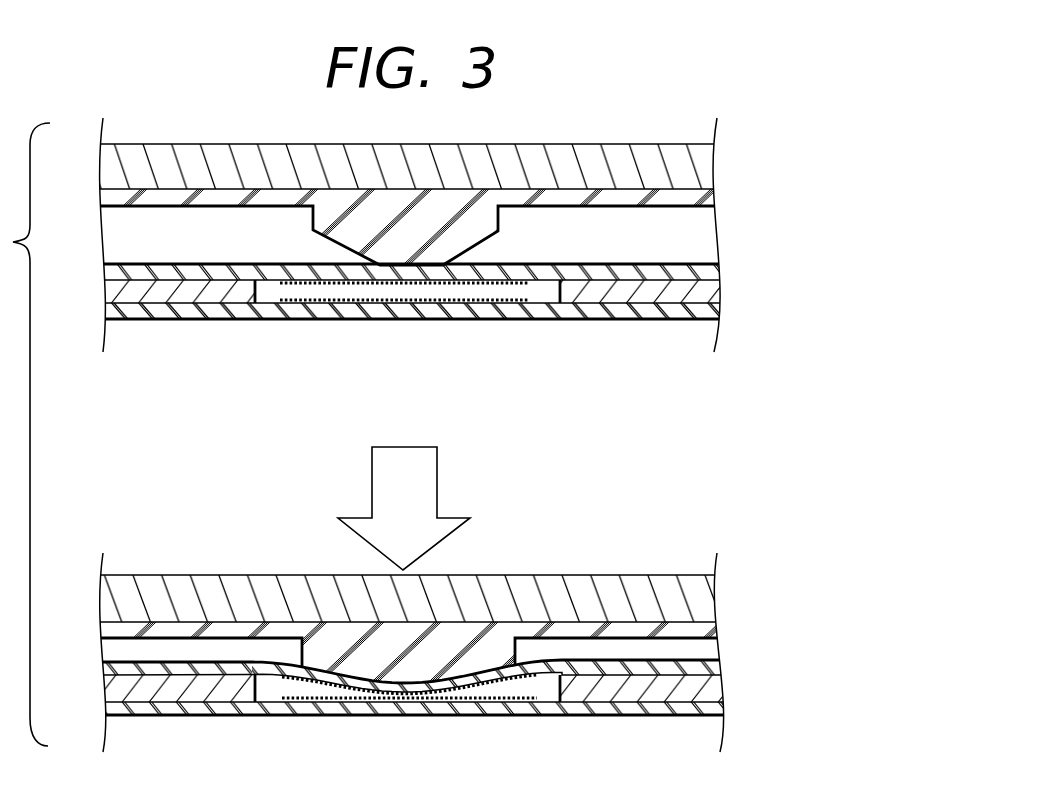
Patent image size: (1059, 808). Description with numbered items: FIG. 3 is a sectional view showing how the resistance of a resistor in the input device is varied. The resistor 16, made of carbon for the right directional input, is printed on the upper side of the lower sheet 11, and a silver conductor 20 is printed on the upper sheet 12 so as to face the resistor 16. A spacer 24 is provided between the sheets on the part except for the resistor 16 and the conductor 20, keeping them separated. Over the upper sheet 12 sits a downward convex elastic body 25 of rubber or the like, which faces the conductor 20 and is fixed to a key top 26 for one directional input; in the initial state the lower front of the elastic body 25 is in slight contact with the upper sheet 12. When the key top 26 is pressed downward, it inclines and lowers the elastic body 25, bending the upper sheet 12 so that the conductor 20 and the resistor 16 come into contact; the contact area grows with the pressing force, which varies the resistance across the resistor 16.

The lower sheet 11 is at (723, 310).
The upper sheet 12 is at (723, 267).
The resistor 16 is at (295, 305).
The conductor 20 is at (420, 285).
The spacer 24 is at (723, 288).
The elastic body 25 is at (707, 192).
The key top 26 is at (712, 156).